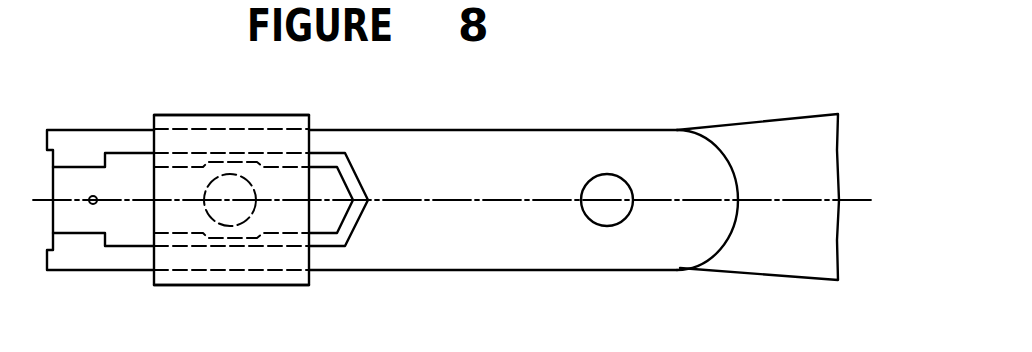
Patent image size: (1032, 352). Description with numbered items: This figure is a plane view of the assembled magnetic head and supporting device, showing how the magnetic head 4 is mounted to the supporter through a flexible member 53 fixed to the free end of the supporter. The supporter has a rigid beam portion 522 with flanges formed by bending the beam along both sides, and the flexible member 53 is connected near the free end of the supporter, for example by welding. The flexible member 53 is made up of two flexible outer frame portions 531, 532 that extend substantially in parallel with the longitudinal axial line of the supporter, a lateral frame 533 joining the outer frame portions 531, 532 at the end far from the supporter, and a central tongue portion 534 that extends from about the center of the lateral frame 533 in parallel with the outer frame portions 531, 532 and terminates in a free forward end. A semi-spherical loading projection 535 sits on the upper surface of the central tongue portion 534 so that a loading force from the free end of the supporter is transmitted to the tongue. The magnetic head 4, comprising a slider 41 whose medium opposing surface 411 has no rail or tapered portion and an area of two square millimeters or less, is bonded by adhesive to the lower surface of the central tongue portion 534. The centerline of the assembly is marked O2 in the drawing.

The magnetic head 4 is at (241, 112).
The slider 41 is at (250, 278).
The medium opposing surface 411 is at (190, 116).
The flexible member 53 is at (480, 155).
The rigid beam portion 522 is at (738, 252).
The flexible outer frame portion 531 is at (165, 128).
The flexible outer frame portion 532 is at (187, 260).
The lateral frame 533 is at (100, 245).
The central tongue portion 534 is at (345, 215).
The loading projection 535 is at (257, 213).
The optical axis O2 is at (847, 202).